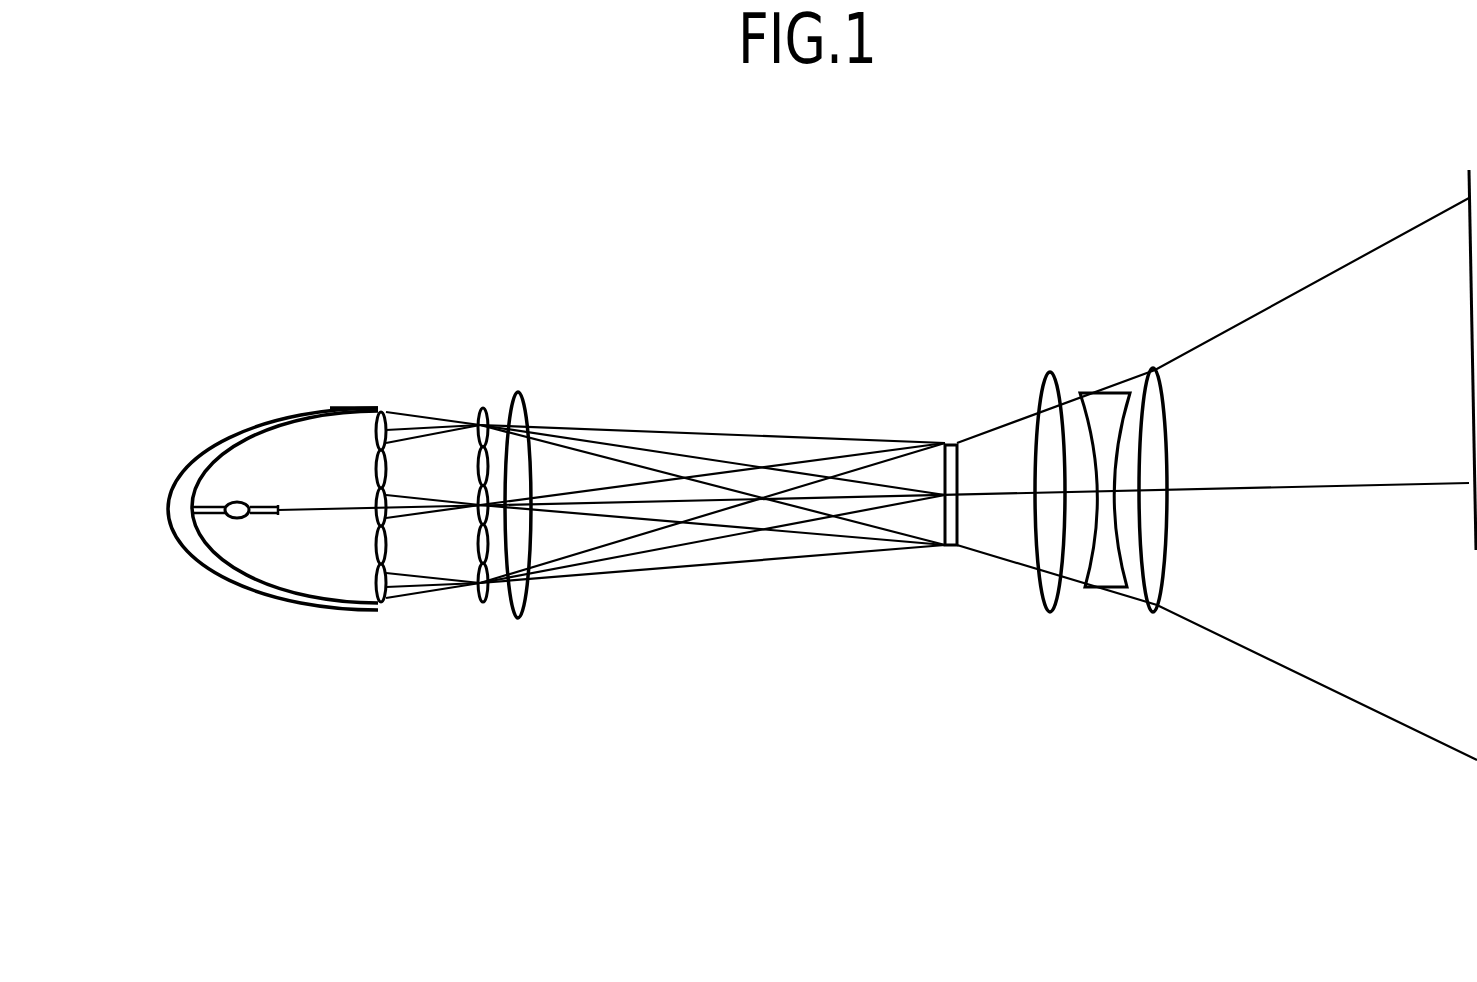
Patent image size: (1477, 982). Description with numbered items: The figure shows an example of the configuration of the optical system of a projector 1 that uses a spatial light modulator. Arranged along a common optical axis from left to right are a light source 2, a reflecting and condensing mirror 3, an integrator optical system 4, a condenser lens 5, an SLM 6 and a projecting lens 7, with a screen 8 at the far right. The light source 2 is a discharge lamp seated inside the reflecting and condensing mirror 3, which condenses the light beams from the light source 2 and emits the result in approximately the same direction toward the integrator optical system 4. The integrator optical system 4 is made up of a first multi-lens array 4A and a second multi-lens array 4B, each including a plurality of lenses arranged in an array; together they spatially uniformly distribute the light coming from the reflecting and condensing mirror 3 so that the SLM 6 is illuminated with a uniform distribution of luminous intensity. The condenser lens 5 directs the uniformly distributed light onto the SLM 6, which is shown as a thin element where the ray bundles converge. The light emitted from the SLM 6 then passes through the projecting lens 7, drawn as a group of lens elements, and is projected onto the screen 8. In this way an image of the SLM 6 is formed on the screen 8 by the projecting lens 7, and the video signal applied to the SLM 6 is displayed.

The projector 1 is at (861, 193).
The light source 2 is at (240, 525).
The reflecting and condensing mirror 3 is at (240, 418).
The integrator optical system 4 is at (433, 415).
The first multi-lens array 4A is at (383, 412).
The second multi-lens array 4B is at (479, 445).
The condenser lens 5 is at (521, 403).
The SLM 6 is at (948, 445).
The projecting lens 7 is at (1105, 348).
The screen 8 is at (1469, 178).